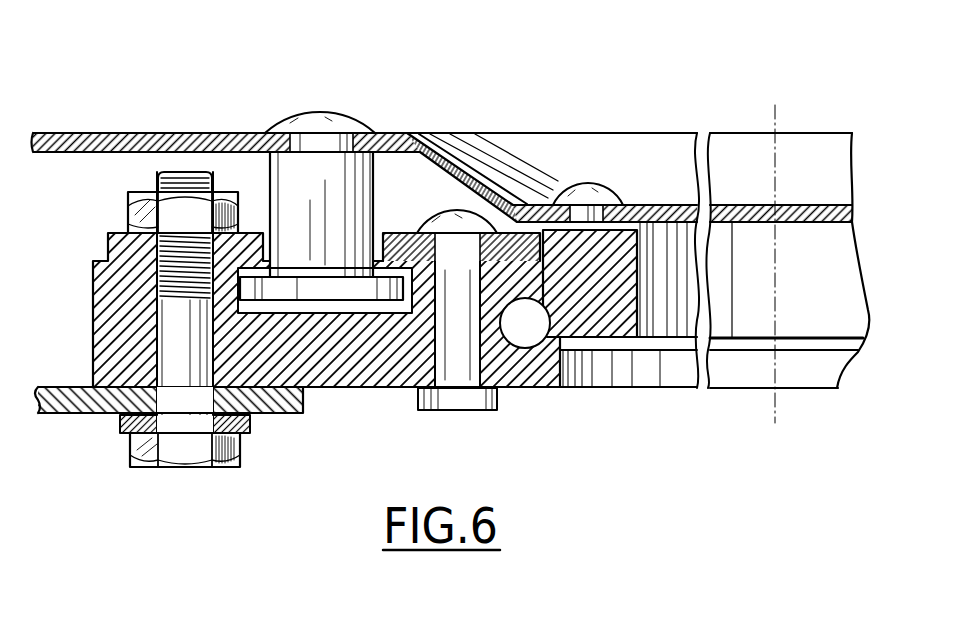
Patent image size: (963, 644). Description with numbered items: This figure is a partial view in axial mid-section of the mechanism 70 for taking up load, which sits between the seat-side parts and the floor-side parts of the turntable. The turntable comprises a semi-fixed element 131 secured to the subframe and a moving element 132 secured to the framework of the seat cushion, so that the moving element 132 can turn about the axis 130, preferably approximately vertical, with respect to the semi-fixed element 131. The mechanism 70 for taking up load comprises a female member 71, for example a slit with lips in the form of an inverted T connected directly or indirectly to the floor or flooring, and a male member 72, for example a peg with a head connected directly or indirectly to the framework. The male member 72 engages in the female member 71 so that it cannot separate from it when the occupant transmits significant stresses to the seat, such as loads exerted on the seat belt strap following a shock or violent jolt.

The mechanism for taking up load 70 is at (372, 45).
The female member 71 is at (248, 235).
The male member 72 is at (333, 177).
The axis 130 is at (778, 402).
The semi-fixed element 131 is at (276, 400).
The moving element 132 is at (494, 134).